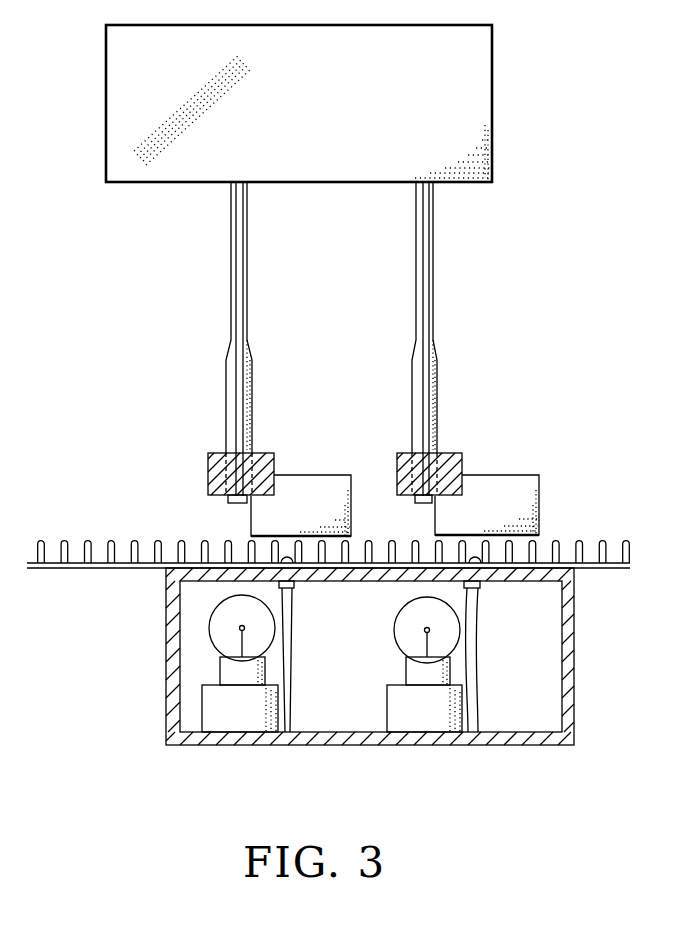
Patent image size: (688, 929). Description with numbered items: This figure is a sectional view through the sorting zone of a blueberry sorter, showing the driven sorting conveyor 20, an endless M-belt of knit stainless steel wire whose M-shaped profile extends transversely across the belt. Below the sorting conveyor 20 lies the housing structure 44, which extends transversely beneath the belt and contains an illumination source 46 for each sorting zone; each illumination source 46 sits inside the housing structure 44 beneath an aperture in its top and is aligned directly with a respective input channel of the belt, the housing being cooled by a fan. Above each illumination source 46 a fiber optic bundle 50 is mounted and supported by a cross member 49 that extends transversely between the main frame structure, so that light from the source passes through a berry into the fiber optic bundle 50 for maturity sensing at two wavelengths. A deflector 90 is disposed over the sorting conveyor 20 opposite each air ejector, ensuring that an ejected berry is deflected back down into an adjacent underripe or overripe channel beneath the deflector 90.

The sorting conveyor 20 is at (102, 578).
The housing structure 44 is at (165, 677).
The illumination source 46 is at (432, 718).
The cross member 49 is at (408, 453).
The fiber optic bundle 50 is at (411, 371).
The deflector 90 is at (330, 478).